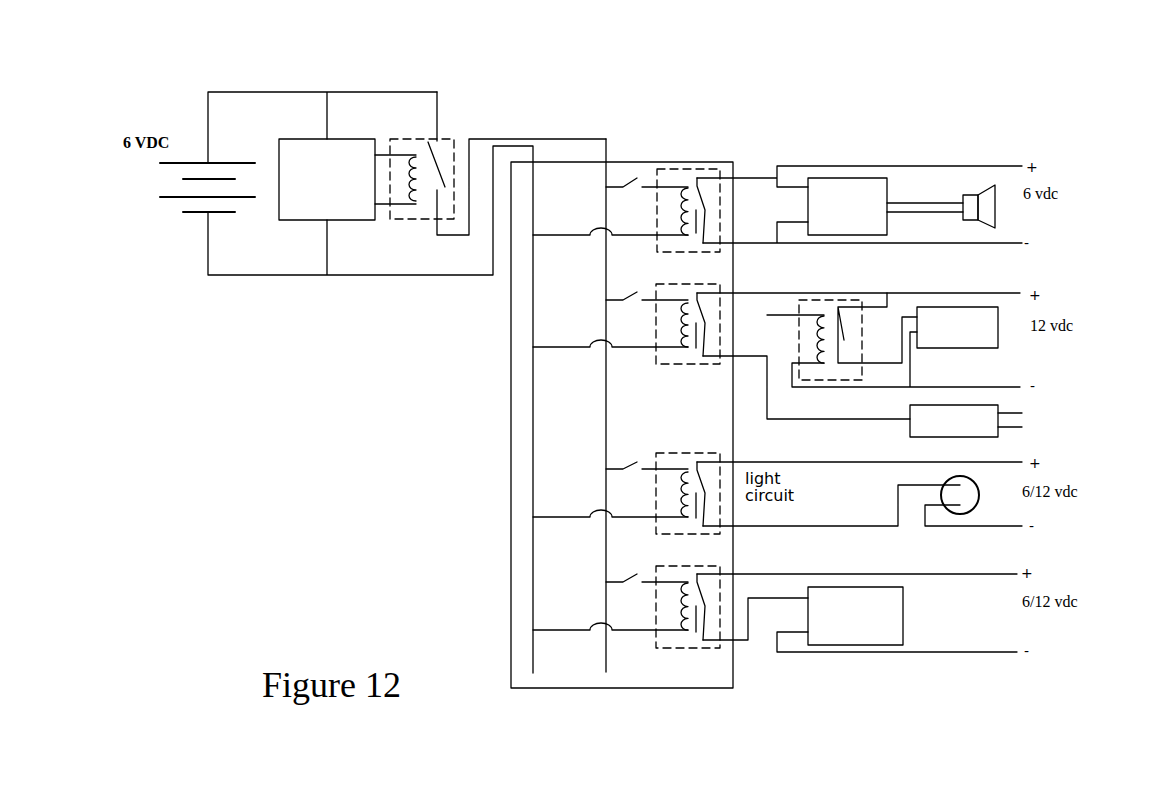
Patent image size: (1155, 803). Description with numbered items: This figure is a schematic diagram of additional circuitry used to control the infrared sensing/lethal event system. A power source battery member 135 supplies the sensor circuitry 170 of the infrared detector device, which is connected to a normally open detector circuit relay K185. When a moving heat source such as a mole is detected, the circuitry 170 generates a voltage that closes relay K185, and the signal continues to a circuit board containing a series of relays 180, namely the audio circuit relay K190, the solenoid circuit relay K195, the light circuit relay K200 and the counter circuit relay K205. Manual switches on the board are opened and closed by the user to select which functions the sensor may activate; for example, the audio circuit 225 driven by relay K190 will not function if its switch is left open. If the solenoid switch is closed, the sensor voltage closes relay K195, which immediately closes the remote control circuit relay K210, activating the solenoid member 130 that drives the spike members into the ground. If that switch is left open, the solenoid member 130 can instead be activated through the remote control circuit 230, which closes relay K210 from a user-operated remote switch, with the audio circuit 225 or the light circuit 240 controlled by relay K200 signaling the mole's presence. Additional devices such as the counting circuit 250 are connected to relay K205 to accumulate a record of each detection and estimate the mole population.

The power source battery member 135 is at (165, 216).
The electronics circuitry 170 is at (350, 208).
The detector circuit relay member K185 is at (421, 148).
The series of relay members 180 is at (643, 118).
The audio circuit relay member K190 is at (669, 182).
The audio circuit 225 is at (875, 198).
The solenoid circuit relay member K195 is at (668, 293).
The remote control circuit relay member K210 is at (812, 312).
The solenoid member 130 is at (983, 337).
The solenoid remote control circuit 230 is at (980, 417).
The light circuit relay member K200 is at (667, 460).
The light circuit 240 is at (857, 487).
The counter circuit relay member K205 is at (682, 574).
The counting circuit 250 is at (892, 637).